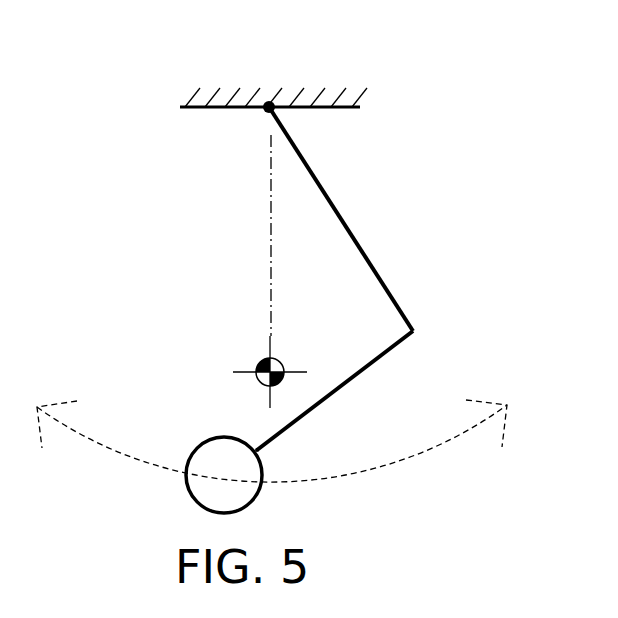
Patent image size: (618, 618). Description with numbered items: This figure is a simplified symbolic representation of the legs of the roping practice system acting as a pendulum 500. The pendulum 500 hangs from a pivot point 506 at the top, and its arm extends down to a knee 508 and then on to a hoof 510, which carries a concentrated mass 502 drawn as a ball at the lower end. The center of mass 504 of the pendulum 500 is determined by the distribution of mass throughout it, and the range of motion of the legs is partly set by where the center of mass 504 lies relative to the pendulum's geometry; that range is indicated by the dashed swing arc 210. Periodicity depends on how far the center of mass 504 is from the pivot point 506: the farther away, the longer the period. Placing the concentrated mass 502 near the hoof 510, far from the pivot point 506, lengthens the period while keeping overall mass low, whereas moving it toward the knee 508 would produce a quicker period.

The pivot point 506 is at (269, 100).
The pendulum 500 is at (328, 183).
The knee 508 is at (414, 331).
The center of mass 504 is at (252, 352).
The concentrated mass 502 is at (187, 482).
The hoof 510 is at (258, 450).
The swing path arc 210 is at (433, 445).